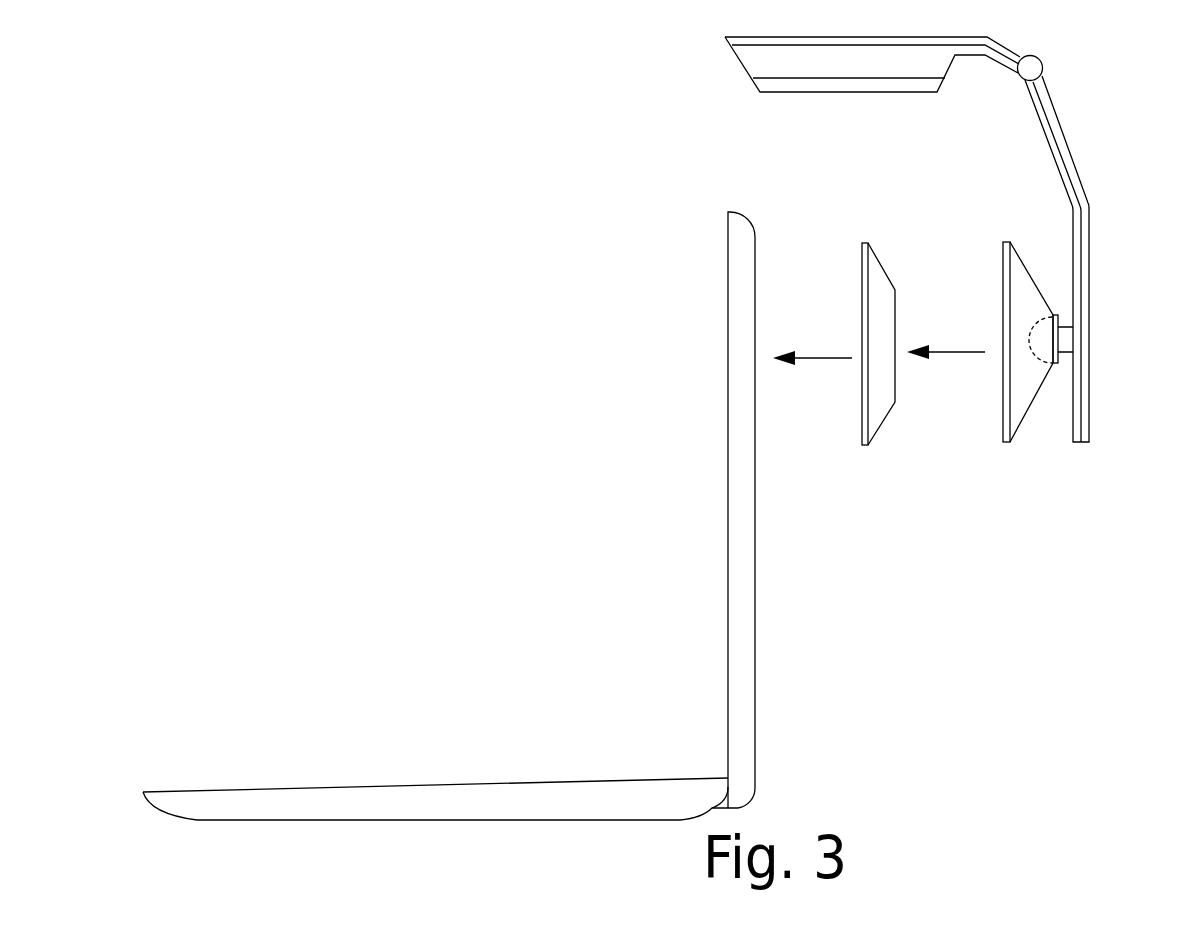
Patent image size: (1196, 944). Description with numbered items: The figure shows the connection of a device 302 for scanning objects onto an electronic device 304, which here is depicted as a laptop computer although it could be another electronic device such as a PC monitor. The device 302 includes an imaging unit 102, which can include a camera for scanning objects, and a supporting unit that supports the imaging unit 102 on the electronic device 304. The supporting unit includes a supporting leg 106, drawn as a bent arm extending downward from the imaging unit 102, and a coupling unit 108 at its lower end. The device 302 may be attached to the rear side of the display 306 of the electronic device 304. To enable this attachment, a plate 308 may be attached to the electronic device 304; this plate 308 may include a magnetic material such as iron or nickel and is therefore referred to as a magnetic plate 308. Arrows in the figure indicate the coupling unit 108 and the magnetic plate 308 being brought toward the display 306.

The device 302 is at (944, 262).
The imaging unit 102 is at (810, 117).
The supporting leg 106 is at (1055, 165).
The coupling unit 108 is at (1023, 418).
The magnetic plate 308 is at (887, 417).
The electronic device 304 is at (498, 516).
The display 306 is at (755, 595).